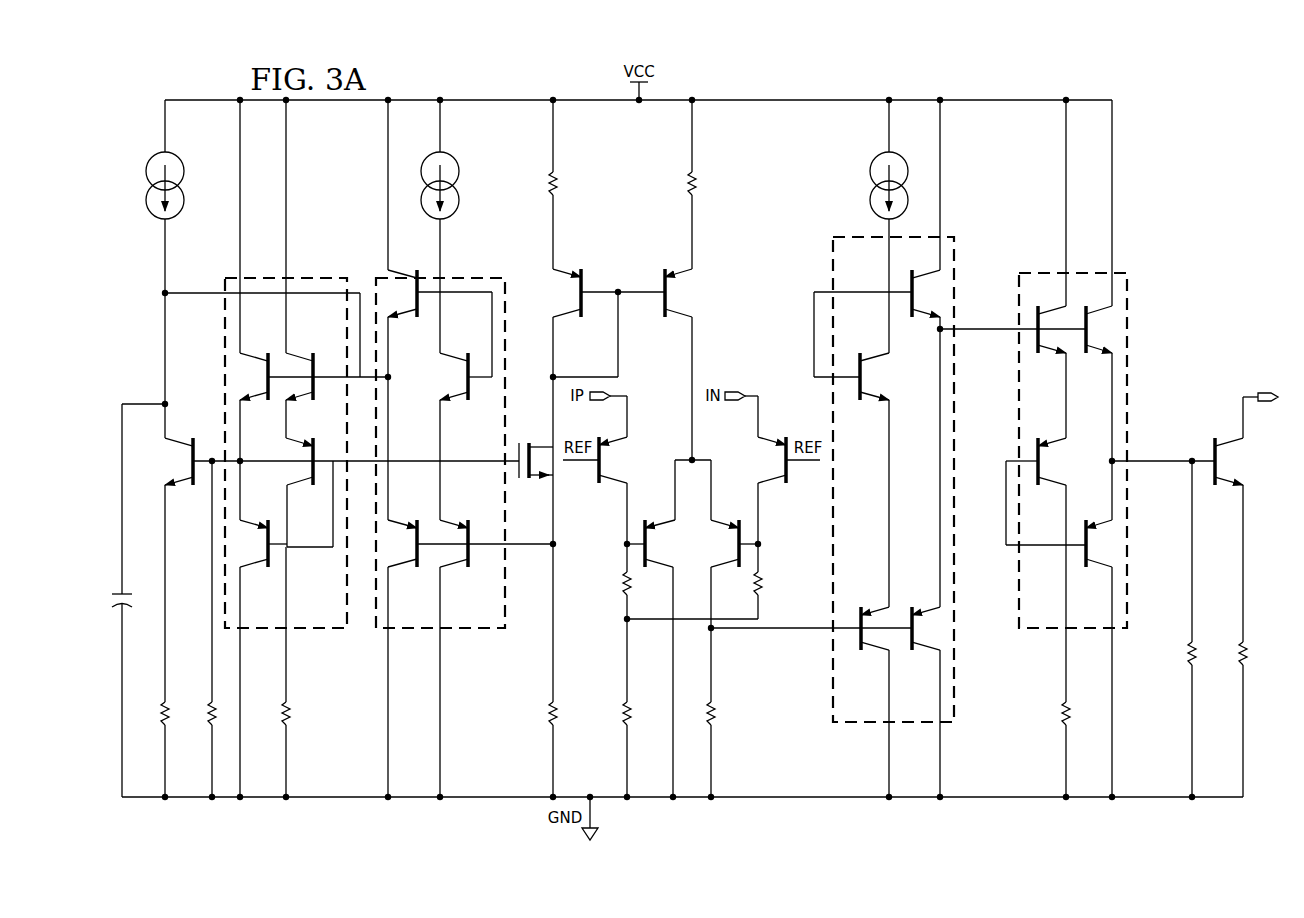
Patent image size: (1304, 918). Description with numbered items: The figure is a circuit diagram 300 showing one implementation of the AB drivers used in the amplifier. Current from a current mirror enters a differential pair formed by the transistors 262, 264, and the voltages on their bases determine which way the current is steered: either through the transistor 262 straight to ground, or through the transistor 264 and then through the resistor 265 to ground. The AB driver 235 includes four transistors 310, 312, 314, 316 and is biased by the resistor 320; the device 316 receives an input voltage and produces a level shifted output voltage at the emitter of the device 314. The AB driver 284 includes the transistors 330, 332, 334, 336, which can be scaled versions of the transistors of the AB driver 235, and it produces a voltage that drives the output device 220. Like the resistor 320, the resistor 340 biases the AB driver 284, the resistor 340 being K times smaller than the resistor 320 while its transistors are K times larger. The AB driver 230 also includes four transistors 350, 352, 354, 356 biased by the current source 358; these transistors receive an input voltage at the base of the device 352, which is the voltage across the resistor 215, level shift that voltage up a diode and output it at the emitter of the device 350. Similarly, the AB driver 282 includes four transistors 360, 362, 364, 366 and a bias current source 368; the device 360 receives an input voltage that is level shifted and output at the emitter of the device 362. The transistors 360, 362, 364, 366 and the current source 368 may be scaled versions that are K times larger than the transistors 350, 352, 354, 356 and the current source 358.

The circuit diagram 300 is at (1160, 102).
The AB driver 235 is at (318, 277).
The AB driver 230 is at (472, 277).
The AB driver 282 is at (830, 268).
The AB driver 284 is at (1132, 350).
The current source 358 is at (462, 187).
The bias current source 368 is at (871, 187).
The transistor 314 is at (270, 357).
The transistor 316 is at (316, 358).
The transistor 312 is at (318, 478).
The transistor 310 is at (270, 562).
The transistor 354 is at (419, 310).
The transistor 356 is at (468, 395).
The transistor 350 is at (419, 562).
The transistor 352 is at (470, 562).
The transistor 262 is at (646, 528).
The transistor 264 is at (744, 528).
The transistor 366 is at (912, 307).
The transistor 364 is at (862, 392).
The transistor 360 is at (862, 645).
The transistor 362 is at (913, 645).
The transistor 334 is at (1040, 348).
The transistor 336 is at (1088, 348).
The transistor 330 is at (1040, 480).
The transistor 332 is at (1088, 562).
The output device 220 is at (1215, 480).
The resistor 320 is at (290, 712).
The resistor 215 is at (548, 712).
The resistor 265 is at (714, 712).
The resistor 340 is at (1068, 722).